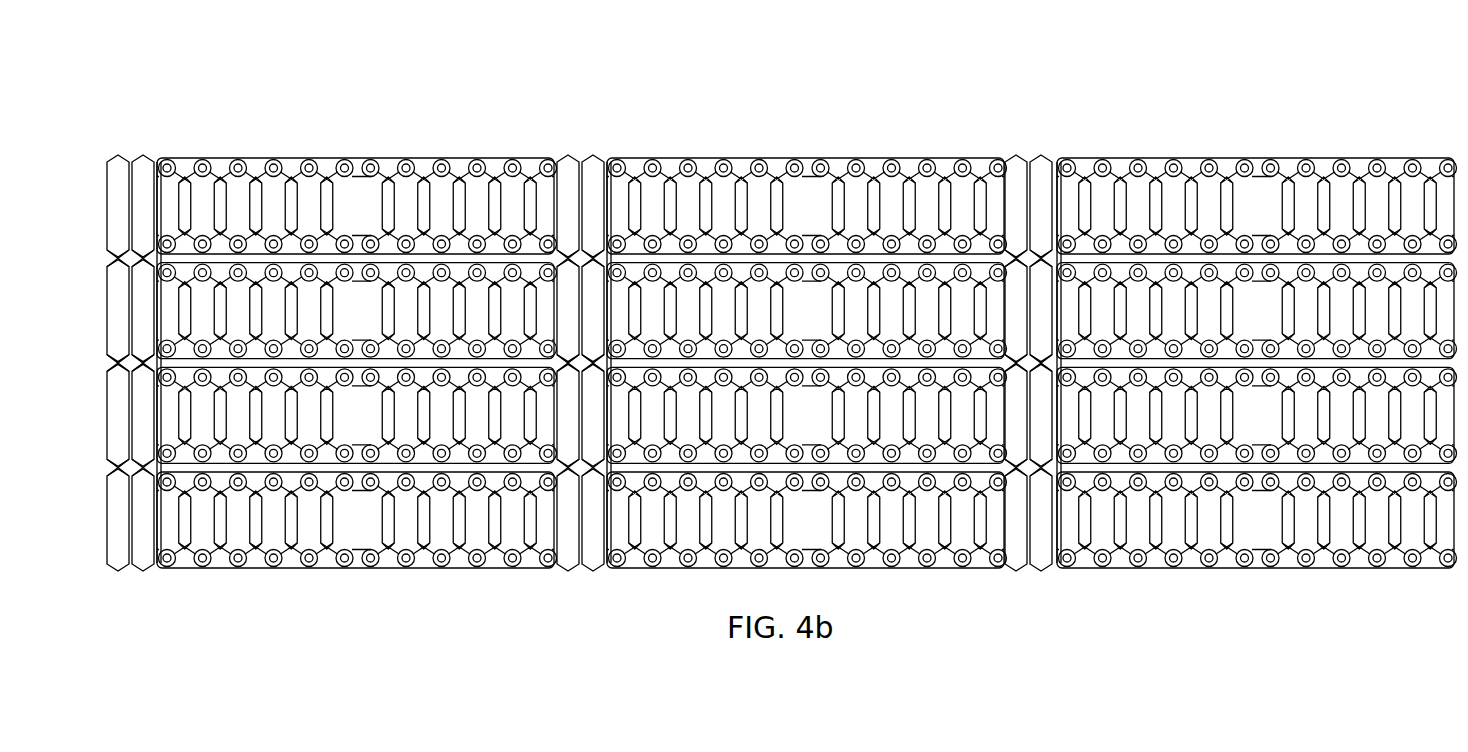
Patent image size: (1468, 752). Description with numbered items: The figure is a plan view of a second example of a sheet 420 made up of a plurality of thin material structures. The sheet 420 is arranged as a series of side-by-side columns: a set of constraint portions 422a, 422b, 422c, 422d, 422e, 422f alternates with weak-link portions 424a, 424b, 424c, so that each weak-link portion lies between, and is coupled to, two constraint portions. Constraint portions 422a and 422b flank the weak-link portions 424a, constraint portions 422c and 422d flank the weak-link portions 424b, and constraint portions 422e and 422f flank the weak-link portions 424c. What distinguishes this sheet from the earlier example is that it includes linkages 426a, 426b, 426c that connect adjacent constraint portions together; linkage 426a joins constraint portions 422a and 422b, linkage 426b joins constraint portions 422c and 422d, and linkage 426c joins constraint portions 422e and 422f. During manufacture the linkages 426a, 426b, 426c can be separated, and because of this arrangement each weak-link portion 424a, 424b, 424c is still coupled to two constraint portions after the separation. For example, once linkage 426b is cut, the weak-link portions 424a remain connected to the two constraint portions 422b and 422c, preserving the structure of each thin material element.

The sheet 420 is at (1347, 93).
The constraint portion 422a is at (107, 149).
The constraint portion 422b is at (163, 151).
The constraint portion 422c is at (559, 149).
The constraint portion 422d is at (614, 151).
The constraint portion 422e is at (1006, 149).
The constraint portion 422f is at (1063, 151).
The weak-link portion 424a is at (348, 150).
The weak-link portion 424b is at (798, 150).
The weak-link portion 424c is at (1247, 150).
The linkage 426a is at (141, 150).
The linkage 426b is at (592, 150).
The linkage 426c is at (1039, 150).